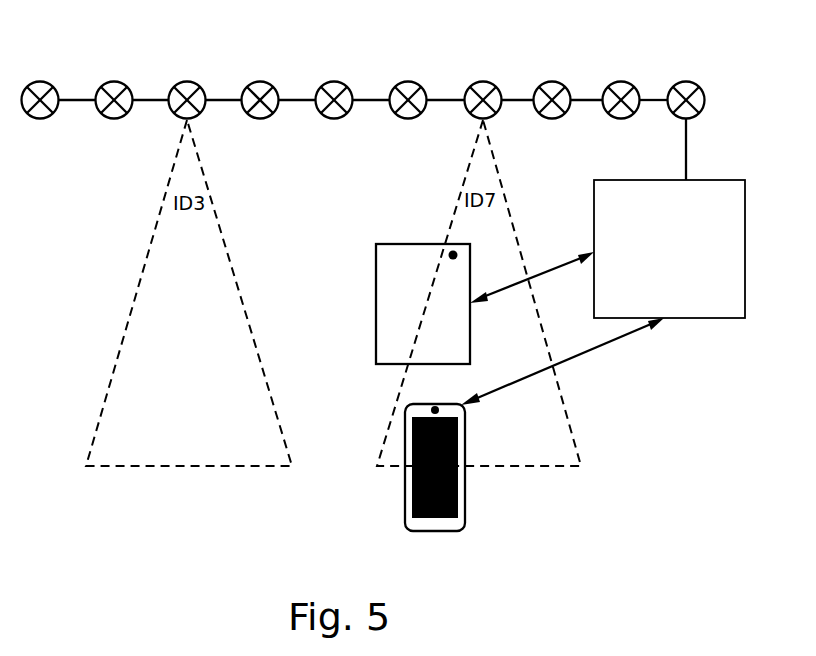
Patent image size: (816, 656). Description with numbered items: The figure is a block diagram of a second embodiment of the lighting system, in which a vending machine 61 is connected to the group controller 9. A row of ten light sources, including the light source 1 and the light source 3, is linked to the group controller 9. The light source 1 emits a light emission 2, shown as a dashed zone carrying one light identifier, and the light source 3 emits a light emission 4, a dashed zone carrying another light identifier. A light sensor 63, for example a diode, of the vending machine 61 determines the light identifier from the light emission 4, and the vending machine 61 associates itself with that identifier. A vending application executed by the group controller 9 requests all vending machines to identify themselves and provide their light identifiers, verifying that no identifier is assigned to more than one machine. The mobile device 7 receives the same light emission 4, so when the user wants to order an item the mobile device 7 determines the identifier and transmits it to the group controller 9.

The light source 1 is at (177, 82).
The light emission 2 is at (207, 180).
The light source 3 is at (472, 82).
The light emission 4 is at (492, 165).
The vending machine 61 is at (376, 303).
The light sensor 63 is at (453, 255).
The mobile device 7 is at (430, 531).
The group controller 9 is at (709, 318).